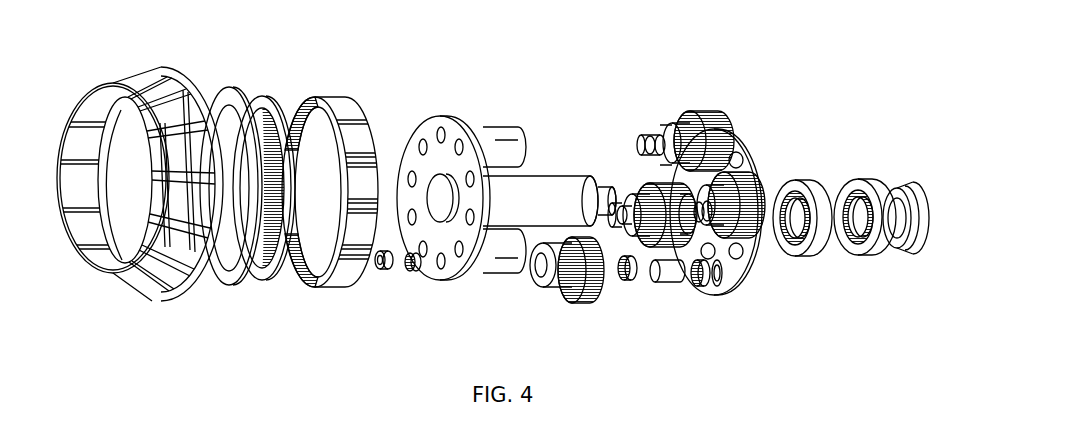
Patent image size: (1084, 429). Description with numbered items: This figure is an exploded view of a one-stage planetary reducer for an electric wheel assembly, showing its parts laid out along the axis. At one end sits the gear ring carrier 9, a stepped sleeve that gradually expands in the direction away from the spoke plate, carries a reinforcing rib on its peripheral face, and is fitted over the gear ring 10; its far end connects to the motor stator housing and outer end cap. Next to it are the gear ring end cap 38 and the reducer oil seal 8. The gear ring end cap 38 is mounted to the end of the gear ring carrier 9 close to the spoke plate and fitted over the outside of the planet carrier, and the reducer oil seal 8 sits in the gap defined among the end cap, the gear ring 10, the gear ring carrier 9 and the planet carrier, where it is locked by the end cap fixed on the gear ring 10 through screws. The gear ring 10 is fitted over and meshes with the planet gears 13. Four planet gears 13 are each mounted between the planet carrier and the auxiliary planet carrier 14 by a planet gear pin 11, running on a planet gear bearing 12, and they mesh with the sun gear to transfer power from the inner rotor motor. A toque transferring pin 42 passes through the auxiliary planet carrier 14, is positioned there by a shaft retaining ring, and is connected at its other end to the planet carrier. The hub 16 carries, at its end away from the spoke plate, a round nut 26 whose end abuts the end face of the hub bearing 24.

The gear ring carrier 9 is at (182, 77).
The gear ring end cap 38 is at (225, 90).
The reducer oil seal 8 is at (247, 100).
The gear ring 10 is at (293, 108).
The hub 16 is at (434, 125).
The planet gear pin 11 is at (500, 272).
The planet gear 13 is at (690, 120).
The auxiliary planet carrier 14 is at (743, 133).
The toque transferring pin 42 is at (747, 280).
The planet gear bearing 12 is at (700, 287).
The hub bearing 24 is at (810, 255).
The round nut 26 is at (890, 255).